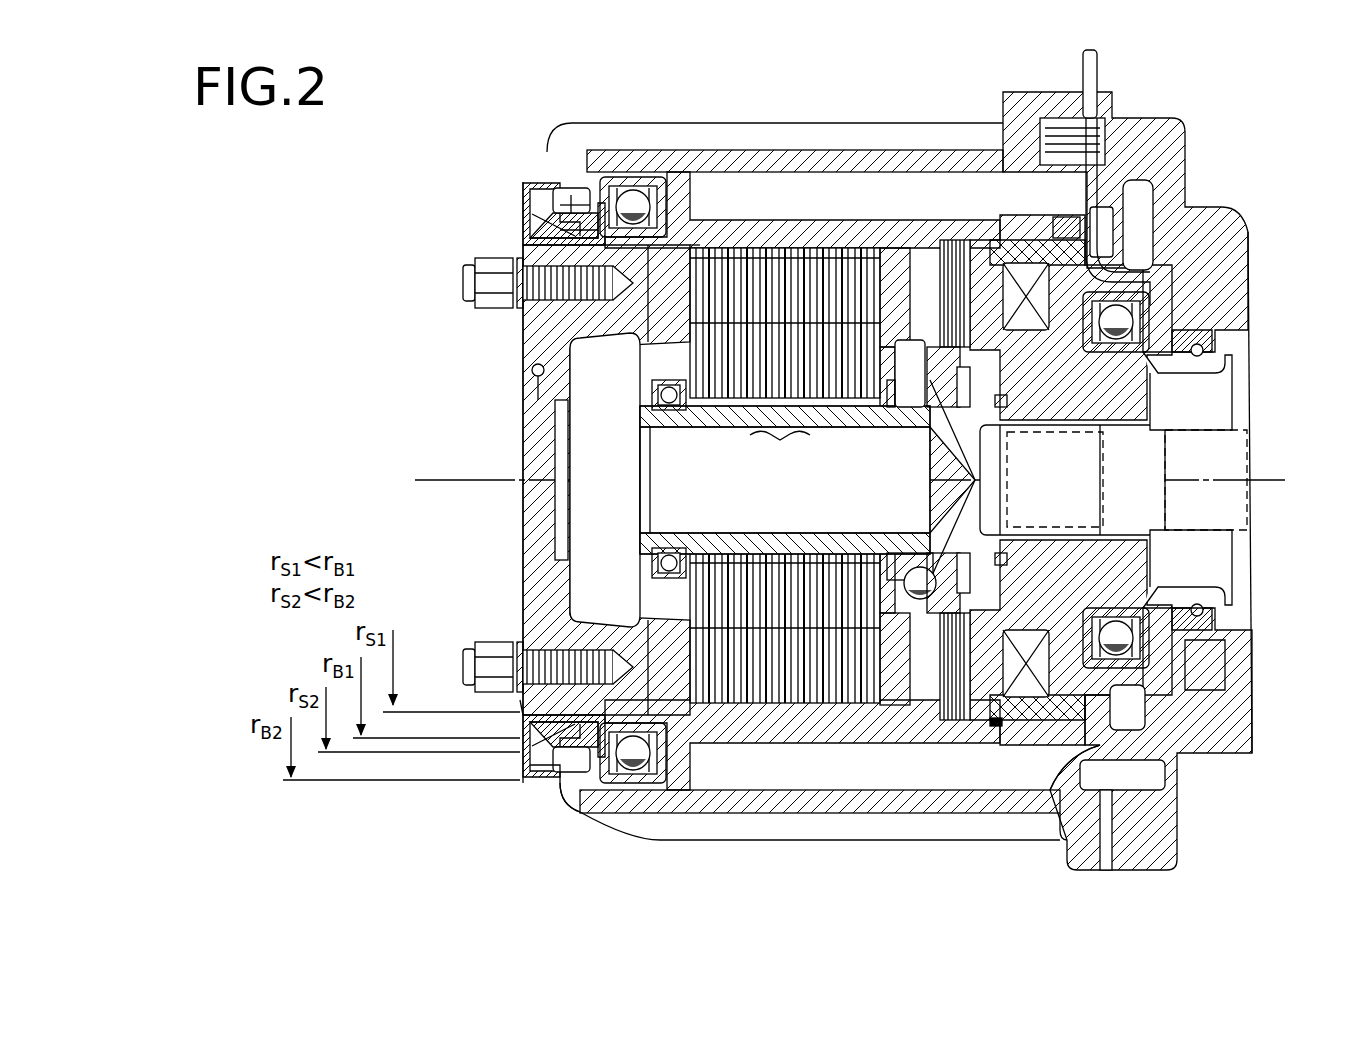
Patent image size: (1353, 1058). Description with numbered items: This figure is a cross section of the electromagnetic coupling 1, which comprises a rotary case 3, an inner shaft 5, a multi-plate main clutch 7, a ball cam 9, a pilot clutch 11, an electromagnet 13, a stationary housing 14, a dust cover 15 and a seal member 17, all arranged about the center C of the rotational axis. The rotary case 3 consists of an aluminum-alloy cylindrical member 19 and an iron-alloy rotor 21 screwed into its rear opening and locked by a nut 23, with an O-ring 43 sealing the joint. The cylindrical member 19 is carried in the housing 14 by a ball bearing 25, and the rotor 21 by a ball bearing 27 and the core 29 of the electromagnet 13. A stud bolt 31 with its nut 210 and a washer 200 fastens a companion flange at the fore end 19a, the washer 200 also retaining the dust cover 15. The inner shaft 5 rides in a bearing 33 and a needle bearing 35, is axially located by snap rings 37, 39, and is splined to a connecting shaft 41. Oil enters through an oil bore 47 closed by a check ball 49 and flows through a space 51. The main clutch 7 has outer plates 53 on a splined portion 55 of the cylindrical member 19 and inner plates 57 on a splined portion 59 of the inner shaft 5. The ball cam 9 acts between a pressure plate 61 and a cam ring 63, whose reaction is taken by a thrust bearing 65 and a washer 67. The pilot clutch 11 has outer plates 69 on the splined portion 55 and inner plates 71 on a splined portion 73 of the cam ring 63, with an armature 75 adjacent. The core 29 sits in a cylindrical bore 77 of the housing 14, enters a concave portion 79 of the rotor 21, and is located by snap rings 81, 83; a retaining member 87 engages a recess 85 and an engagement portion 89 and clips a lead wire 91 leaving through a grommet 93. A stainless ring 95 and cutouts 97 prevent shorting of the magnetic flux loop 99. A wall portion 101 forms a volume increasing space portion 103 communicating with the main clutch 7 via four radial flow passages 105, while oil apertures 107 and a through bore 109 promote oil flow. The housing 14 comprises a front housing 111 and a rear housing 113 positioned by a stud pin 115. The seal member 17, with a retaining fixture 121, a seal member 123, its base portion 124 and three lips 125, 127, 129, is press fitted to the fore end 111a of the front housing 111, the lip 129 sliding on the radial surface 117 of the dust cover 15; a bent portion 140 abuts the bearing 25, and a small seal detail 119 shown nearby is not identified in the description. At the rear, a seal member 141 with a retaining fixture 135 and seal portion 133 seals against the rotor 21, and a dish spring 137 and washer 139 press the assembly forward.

The electromagnetic coupling 1 is at (495, 165).
The rotary case 3 is at (735, 218).
The inner shaft 5 is at (632, 420).
The multi-plate type main clutch 7 is at (790, 268).
The ball cam 9 is at (878, 432).
The pilot clutch 11 is at (950, 330).
The electromagnet 13 is at (1180, 240).
The housing 14 is at (835, 135).
The dust cover 15 is at (520, 185).
The seal member 17 is at (515, 195).
The cylindrical member 19 is at (517, 610).
The fore end of the cylindrical member 19a is at (516, 708).
The rotor 21 is at (1250, 365).
The nut 23 is at (1060, 226).
The ball bearing 25 is at (633, 200).
The ball bearing 27 is at (1120, 350).
The core 29 is at (1050, 345).
The stud bolt 31 is at (555, 655).
The bearing 33 is at (668, 440).
The needle bearing 35 is at (1090, 430).
The snap ring 37 is at (652, 408).
The snap ring 39 is at (669, 383).
The connecting shaft 41 is at (1235, 450).
The O-ring 43 is at (998, 728).
The oil bore 47 is at (580, 380).
The check ball 49 is at (532, 370).
The space 51 is at (555, 405).
The outer plates 53 is at (690, 266).
The splined portion 55 is at (878, 250).
The inner plates 57 is at (710, 460).
The splined portion 59 is at (790, 540).
The pressure plate 61 is at (885, 545).
The cam ring 63 is at (945, 535).
The thrust bearing 65 is at (1060, 435).
The washer 67 is at (1000, 417).
The outer plates 69 is at (995, 245).
The inner plates 71 is at (1030, 332).
The splined portion 73 is at (947, 480).
The armature 75 is at (905, 250).
The cylindrical bore 77 is at (1127, 760).
The concave portion 79 is at (1098, 350).
The snap ring 81 is at (1190, 705).
The snap ring 83 is at (1245, 610).
The recess 85 is at (1195, 250).
The retaining member 87 is at (1135, 195).
The engagement portion 89 is at (1128, 262).
The lead wire 91 is at (1097, 62).
The grommet 93 is at (1105, 115).
The ring 95 is at (1005, 345).
The cutouts 97 is at (942, 296).
The magnetic flux loop 99 is at (960, 600).
The wall portion 101 is at (1000, 482).
The volume increasing space portion 103 is at (648, 520).
The radial flow passages 105 is at (782, 442).
The oil apertures 107 is at (850, 425).
The through bore 109 is at (905, 410).
The front housing 111 is at (632, 845).
The fore end of the front housing 111a is at (545, 790).
The rear housing 113 is at (1190, 828).
The stud pin 115 is at (1140, 790).
The radial surface 117 is at (558, 228).
The seal ring 119 is at (556, 200).
The retaining fixture 121 is at (592, 238).
The seal member 123 is at (540, 240).
The base portion 124 is at (571, 195).
The lip 125 is at (540, 250).
The lip 127 is at (588, 200).
The lip 129 is at (548, 190).
The seal portion 133 is at (1187, 480).
The retaining fixture 135 is at (1215, 332).
The dish spring 137 is at (1215, 650).
The washer 139 is at (1215, 682).
The bent portion 140 is at (598, 222).
The seal member 141 is at (1235, 348).
The washer 200 is at (519, 318).
The nut 210 is at (478, 290).
The center of axis C is at (840, 481).